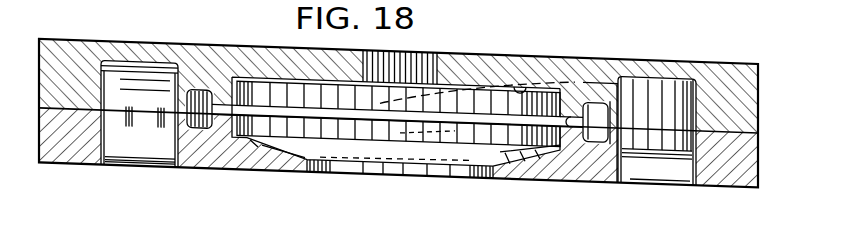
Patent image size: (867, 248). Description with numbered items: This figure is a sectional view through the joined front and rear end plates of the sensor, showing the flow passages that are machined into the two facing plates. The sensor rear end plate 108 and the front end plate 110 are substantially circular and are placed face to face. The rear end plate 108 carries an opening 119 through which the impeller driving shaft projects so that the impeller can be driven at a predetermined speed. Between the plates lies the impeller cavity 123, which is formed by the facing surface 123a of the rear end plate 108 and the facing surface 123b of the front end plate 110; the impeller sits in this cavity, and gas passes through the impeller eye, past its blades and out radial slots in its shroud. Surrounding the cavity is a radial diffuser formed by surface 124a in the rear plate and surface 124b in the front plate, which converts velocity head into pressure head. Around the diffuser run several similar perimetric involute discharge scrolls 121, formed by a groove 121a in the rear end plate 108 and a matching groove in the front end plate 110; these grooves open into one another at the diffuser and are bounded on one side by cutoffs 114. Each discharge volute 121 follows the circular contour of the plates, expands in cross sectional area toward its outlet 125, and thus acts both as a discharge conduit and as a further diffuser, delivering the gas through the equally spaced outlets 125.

The sensor rear end plate 108 is at (761, 115).
The front end plate 110 is at (761, 166).
The cutoff 114 is at (612, 137).
The opening 119 is at (413, 63).
The perimetric involute discharge scroll 121 is at (123, 72).
The groove 121a is at (667, 80).
The impeller cavity 123 is at (230, 100).
The surface 123a is at (520, 85).
The surface 123b is at (526, 150).
The surface 124a is at (588, 108).
The surface 124b is at (229, 113).
The outlet 125 is at (143, 160).